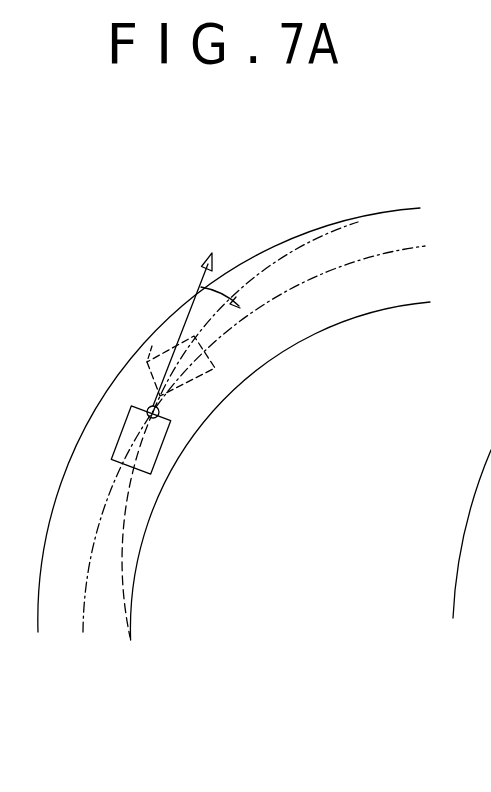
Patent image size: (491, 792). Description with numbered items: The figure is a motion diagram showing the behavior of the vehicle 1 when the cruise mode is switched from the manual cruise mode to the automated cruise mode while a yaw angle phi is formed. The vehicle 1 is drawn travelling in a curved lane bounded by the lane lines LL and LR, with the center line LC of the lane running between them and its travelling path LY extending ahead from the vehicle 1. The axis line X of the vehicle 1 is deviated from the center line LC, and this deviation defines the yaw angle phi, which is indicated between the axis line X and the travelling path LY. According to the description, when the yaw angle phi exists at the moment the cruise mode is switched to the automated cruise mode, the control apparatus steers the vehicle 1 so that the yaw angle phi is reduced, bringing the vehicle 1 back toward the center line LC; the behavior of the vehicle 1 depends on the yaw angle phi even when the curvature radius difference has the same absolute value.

The vehicle 1 is at (152, 346).
The left lane line LL is at (376, 213).
The right lane line LR is at (395, 308).
The center line LC is at (410, 250).
The travelling path LY is at (300, 246).
The axis line X is at (203, 265).
The yaw angle phi is at (232, 288).